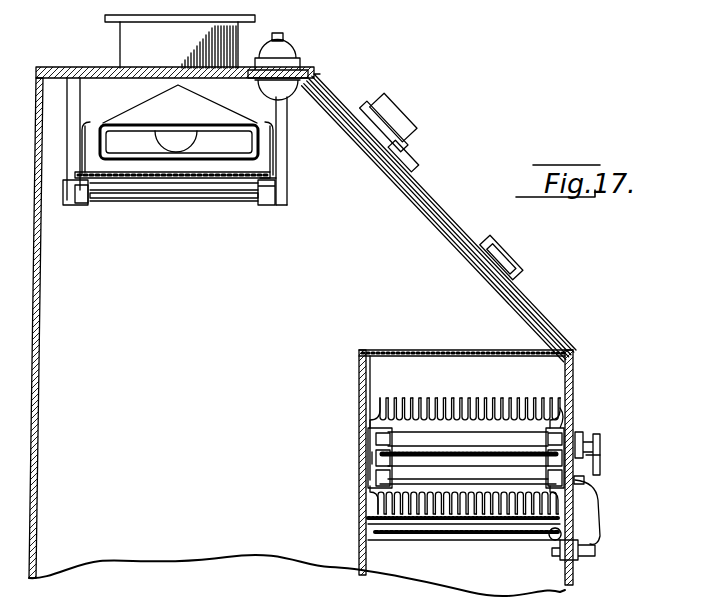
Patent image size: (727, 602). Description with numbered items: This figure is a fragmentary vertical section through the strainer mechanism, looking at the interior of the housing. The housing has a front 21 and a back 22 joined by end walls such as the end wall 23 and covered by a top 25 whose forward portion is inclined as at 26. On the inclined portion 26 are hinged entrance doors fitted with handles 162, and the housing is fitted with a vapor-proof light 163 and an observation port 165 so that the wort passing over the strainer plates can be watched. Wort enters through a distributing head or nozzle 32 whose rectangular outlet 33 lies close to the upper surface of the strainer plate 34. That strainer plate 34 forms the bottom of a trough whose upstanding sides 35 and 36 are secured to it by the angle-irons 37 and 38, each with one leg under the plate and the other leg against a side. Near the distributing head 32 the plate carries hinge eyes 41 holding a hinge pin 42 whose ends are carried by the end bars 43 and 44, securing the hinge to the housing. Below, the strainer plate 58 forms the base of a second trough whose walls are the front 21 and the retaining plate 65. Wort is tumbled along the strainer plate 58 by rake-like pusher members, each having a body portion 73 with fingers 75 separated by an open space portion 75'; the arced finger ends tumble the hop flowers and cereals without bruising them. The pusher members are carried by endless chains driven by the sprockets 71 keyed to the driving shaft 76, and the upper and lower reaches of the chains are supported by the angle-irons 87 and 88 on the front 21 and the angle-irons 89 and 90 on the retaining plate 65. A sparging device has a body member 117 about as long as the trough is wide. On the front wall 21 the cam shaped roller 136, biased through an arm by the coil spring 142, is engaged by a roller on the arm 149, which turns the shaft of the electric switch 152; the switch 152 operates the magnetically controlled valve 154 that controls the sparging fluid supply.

The front 21 is at (574, 390).
The back 22 is at (40, 372).
The end wall 23 is at (183, 454).
The top 25 is at (94, 67).
The inclined portion of the top 26 is at (448, 225).
The distributing head or nozzle 32 is at (195, 100).
The rectangular outlet 33 is at (215, 150).
The strainer plate 34 is at (158, 180).
The upstanding side 35 is at (276, 152).
The upstanding side 36 is at (80, 150).
The angle-iron 37 is at (288, 184).
The angle-iron 38 is at (66, 182).
The hinge eyes 41 is at (115, 190).
The hinge pin 42 is at (92, 210).
The end bar 43 is at (288, 112).
The end bar 44 is at (82, 93).
The strainer plate 58 is at (428, 528).
The retaining member or plate 65 is at (360, 380).
The sprocket 71 is at (372, 458).
The body portion 73 is at (448, 428).
The fingers 75 is at (465, 461).
The open space portion 75' is at (464, 463).
The driving shaft 76 is at (476, 452).
The supporting angle-iron 87 is at (566, 412).
The supporting angle-iron 88 is at (598, 504).
The supporting angle-iron 89 is at (370, 438).
The supporting angle-iron 90 is at (370, 484).
The body member 117 is at (500, 522).
The cam shaped roller 136 is at (590, 432).
The coil spring 142 is at (297, 578).
The arm 149 is at (600, 460).
The electric switch 152 is at (584, 482).
The magnetically controlled valve 154 is at (584, 562).
The handles 162 is at (412, 148).
The vapor-proof light 163 is at (282, 48).
The observation port 165 is at (400, 118).